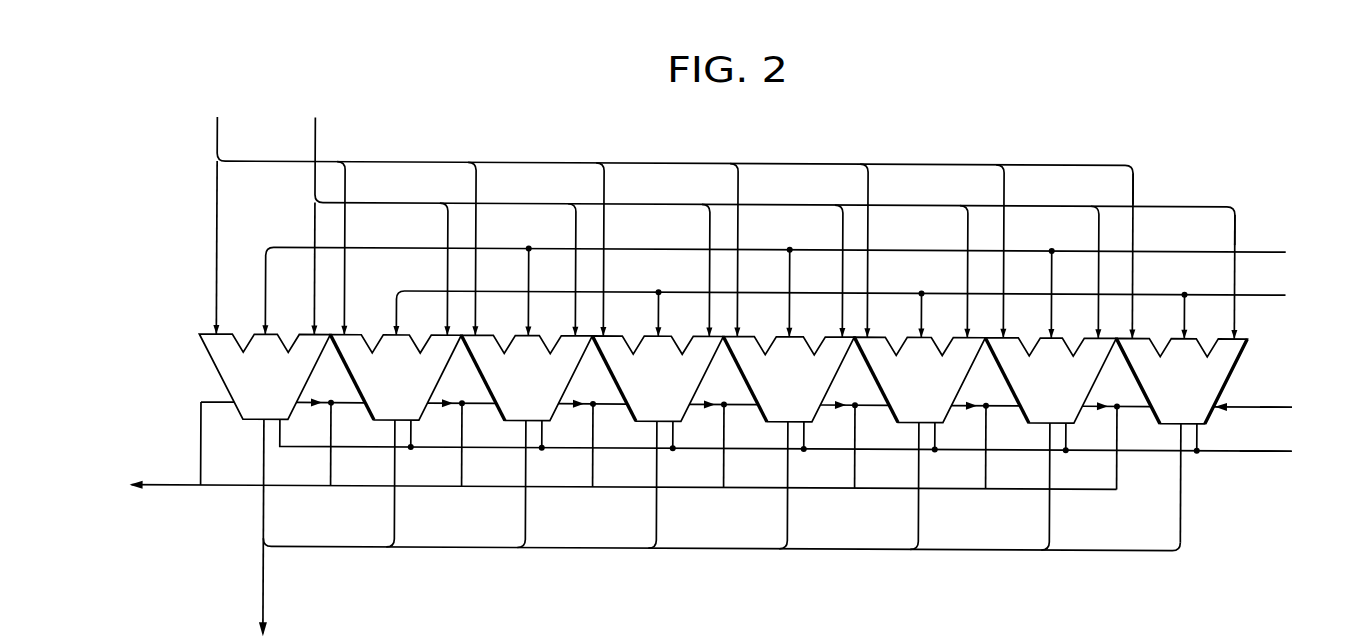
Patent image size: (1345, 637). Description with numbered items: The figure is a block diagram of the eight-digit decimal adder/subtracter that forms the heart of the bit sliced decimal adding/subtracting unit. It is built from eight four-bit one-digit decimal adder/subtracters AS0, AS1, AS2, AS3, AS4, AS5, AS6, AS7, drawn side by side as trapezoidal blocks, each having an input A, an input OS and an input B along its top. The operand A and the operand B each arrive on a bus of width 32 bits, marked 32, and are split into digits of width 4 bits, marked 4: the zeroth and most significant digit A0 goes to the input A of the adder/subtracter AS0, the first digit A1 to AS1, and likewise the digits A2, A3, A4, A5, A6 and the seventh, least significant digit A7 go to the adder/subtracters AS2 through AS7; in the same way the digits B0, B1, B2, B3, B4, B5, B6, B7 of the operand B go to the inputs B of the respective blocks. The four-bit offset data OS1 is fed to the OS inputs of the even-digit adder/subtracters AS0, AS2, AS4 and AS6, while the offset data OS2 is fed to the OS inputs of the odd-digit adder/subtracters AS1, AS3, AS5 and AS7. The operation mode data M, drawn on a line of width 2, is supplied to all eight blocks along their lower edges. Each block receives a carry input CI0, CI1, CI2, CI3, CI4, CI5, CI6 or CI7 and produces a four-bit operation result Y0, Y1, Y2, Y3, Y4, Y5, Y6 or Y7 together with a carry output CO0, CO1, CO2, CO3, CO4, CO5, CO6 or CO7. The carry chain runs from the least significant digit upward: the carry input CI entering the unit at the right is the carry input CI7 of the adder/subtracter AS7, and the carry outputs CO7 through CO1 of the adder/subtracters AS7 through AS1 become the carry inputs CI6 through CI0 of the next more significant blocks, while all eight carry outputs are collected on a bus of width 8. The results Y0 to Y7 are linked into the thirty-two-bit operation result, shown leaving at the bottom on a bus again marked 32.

The operand A is at (671, 148).
The operand B is at (772, 169).
The 32-bit bus width 32 is at (220, 135).
The 4-bit bus width 4 is at (221, 218).
The 8-bit carry output bus width 8 is at (158, 490).
The 2-bit bus width 2 is at (1254, 450).
The operation mode data M is at (795, 441).
The carry input CI is at (1289, 407).
The offset data OS1 is at (796, 287).
The offset data OS2 is at (861, 308).
The adder/subtracter AS0 is at (218, 368).
The adder/subtracter AS1 is at (347, 368).
The adder/subtracter AS2 is at (478, 368).
The adder/subtracter AS3 is at (609, 368).
The adder/subtracter AS4 is at (740, 368).
The adder/subtracter AS5 is at (871, 368).
The adder/subtracter AS6 is at (1002, 368).
The adder/subtracter AS7 is at (1133, 368).
The zeroth digit A0 of operand A A0 is at (230, 247).
The first digit A1 of operand A A1 is at (355, 248).
The second digit A2 of operand A A2 is at (486, 248).
The third digit A3 of operand A A3 is at (614, 249).
The fourth digit A4 of operand A A4 is at (748, 250).
The fifth digit A5 of operand A A5 is at (878, 250).
The sixth digit A6 of operand A A6 is at (1014, 251).
The seventh digit A7 of operand A A7 is at (1146, 255).
The zeroth digit B0 of operand B B0 is at (301, 268).
The first digit B1 of operand B B1 is at (434, 269).
The second digit B2 of operand B B2 is at (562, 270).
The third digit B3 of operand B B3 is at (696, 270).
The fourth digit B4 of operand B B4 is at (829, 271).
The fifth digit B5 of operand B B5 is at (954, 272).
The sixth digit B6 of operand B B6 is at (1085, 272).
The seventh digit B7 of operand B B7 is at (1221, 277).
The carry input CI0 is at (322, 405).
The carry input CI1 is at (453, 405).
The carry input CI2 is at (584, 405).
The carry input CI3 is at (715, 405).
The carry input CI4 is at (846, 405).
The carry input CI5 is at (977, 405).
The carry input CI6 is at (1108, 405).
The carry input CI7 is at (1238, 410).
The carry output CO0 is at (224, 443).
The carry output CO1 is at (354, 444).
The carry output CO2 is at (485, 444).
The carry output CO3 is at (616, 445).
The carry output CO4 is at (747, 446).
The carry output CO5 is at (878, 446).
The carry output CO6 is at (1009, 447).
The carry output CO7 is at (1140, 447).
The operation result Y0 is at (279, 527).
The operation result Y1 is at (408, 483).
The operation result Y2 is at (539, 484).
The operation result Y3 is at (670, 484).
The operation result Y4 is at (801, 485).
The operation result Y5 is at (932, 485).
The operation result Y6 is at (1063, 486).
The operation result Y7 is at (1198, 483).